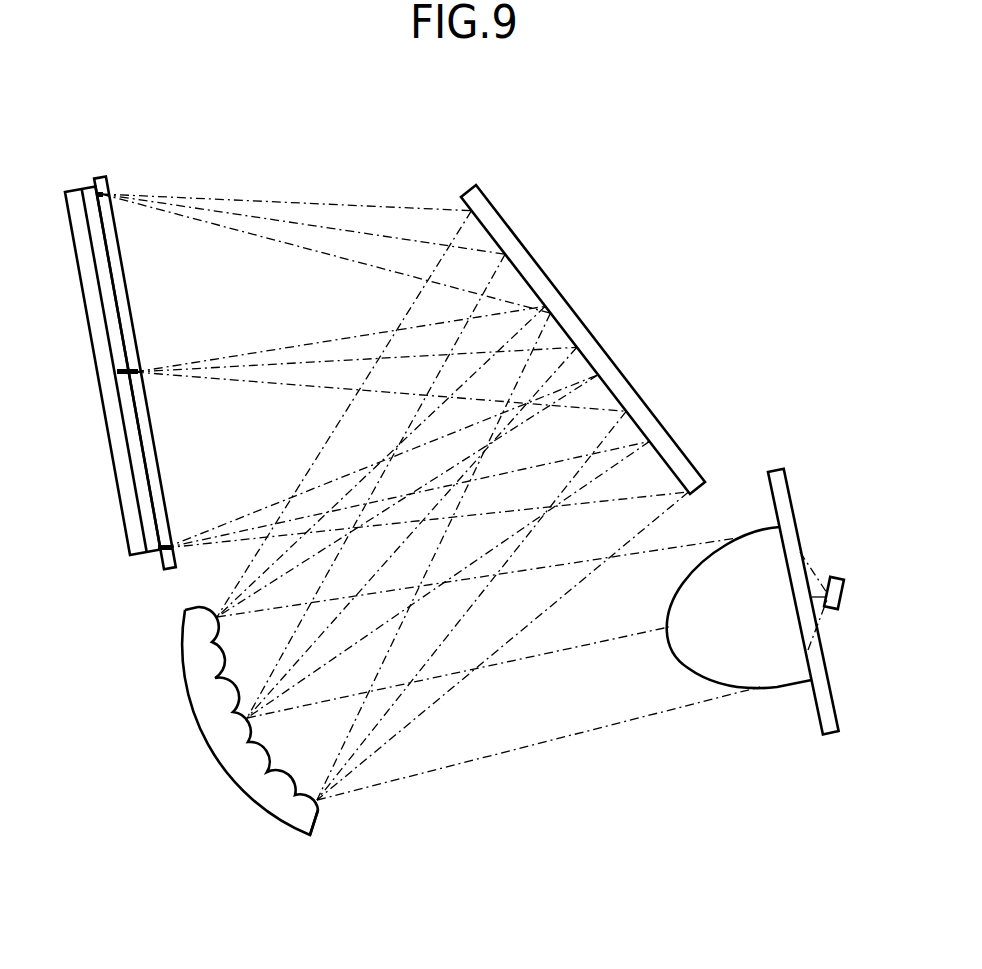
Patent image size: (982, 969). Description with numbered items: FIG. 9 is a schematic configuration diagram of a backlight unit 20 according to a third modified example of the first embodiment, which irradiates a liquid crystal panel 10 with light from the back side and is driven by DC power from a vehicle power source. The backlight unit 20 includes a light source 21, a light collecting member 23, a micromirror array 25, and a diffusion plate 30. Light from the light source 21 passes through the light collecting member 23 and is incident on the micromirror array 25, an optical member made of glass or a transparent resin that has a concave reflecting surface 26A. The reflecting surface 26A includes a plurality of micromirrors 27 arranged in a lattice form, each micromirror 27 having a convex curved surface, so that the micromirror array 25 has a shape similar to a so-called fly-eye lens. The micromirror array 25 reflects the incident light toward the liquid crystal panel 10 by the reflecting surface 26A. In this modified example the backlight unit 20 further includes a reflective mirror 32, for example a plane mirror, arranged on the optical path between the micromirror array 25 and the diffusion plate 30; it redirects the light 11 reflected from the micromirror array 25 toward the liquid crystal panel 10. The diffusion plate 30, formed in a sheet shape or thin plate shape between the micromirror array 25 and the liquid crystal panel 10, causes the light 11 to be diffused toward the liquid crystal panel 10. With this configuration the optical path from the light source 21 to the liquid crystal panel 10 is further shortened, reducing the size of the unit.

The liquid crystal panel 10 is at (74, 186).
The diffusion plate 30 is at (99, 174).
The backlight unit 20 is at (327, 165).
The light 11 is at (522, 750).
The reflective mirror 32 is at (499, 211).
The micromirror array 25 is at (312, 761).
The reflecting surface 26A is at (306, 761).
The micromirror 27 is at (322, 812).
The light collecting member 23 is at (718, 686).
The light source 21 is at (850, 591).